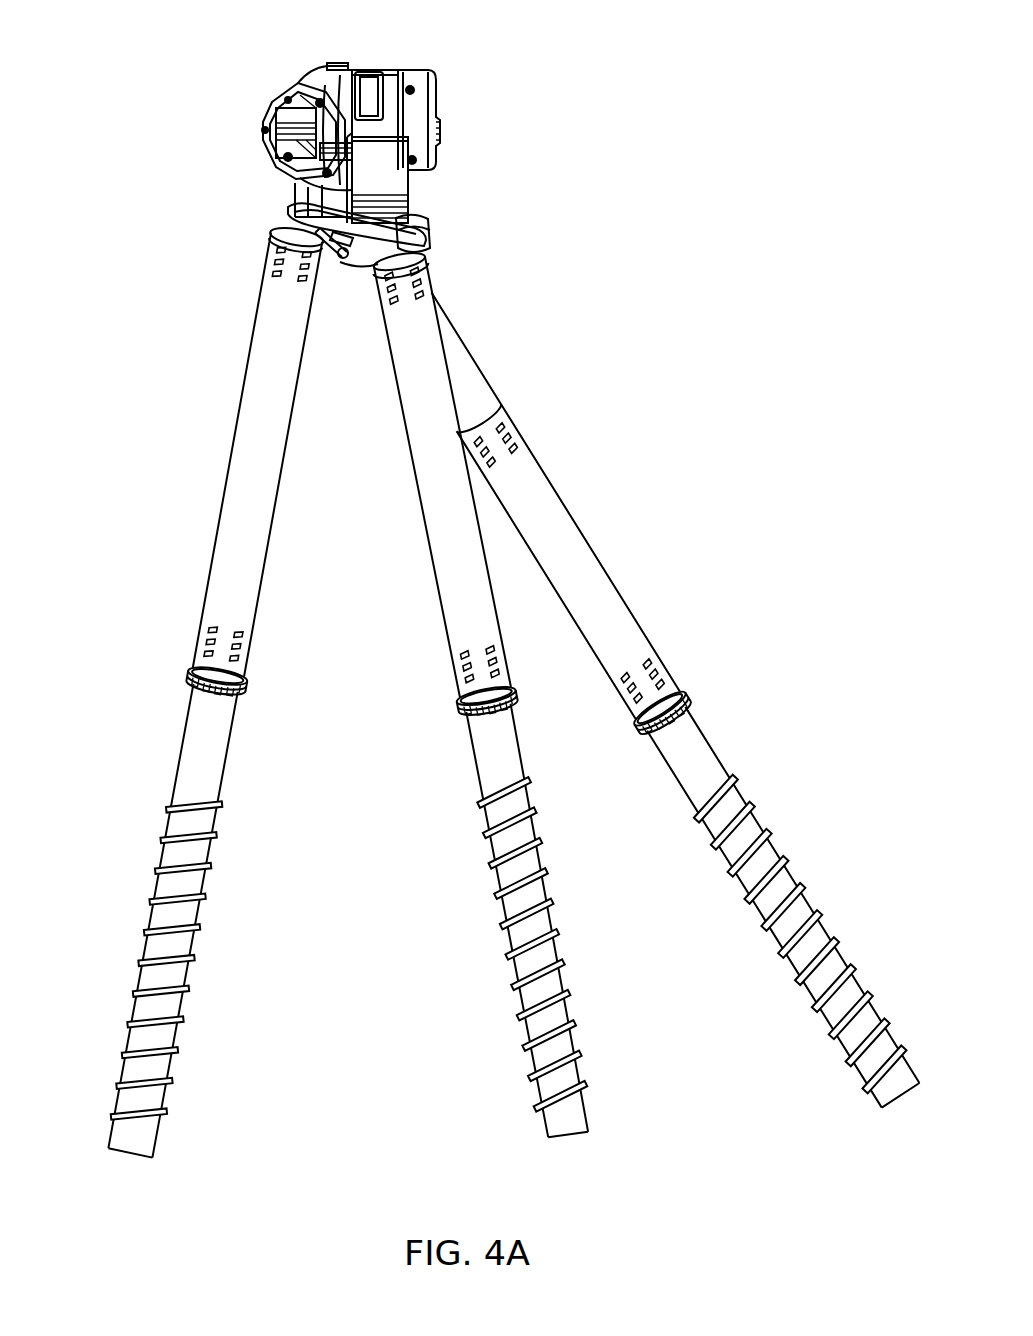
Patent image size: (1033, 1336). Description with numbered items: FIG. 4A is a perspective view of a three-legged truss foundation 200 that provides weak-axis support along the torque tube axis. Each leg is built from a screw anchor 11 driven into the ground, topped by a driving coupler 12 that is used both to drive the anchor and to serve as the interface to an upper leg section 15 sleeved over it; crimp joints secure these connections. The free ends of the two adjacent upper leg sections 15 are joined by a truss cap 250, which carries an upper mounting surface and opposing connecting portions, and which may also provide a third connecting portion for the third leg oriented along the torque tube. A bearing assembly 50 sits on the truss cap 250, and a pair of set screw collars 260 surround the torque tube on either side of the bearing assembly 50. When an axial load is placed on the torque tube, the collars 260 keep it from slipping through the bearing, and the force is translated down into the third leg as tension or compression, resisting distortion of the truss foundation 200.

The truss foundation 200 is at (137, 54).
The bearing assembly 50 is at (420, 33).
The set screw collar 260 is at (283, 88).
The truss cap 250 is at (418, 234).
The upper leg section 15 is at (232, 441).
The driving coupler 12 is at (190, 675).
The screw anchor 11 is at (174, 795).